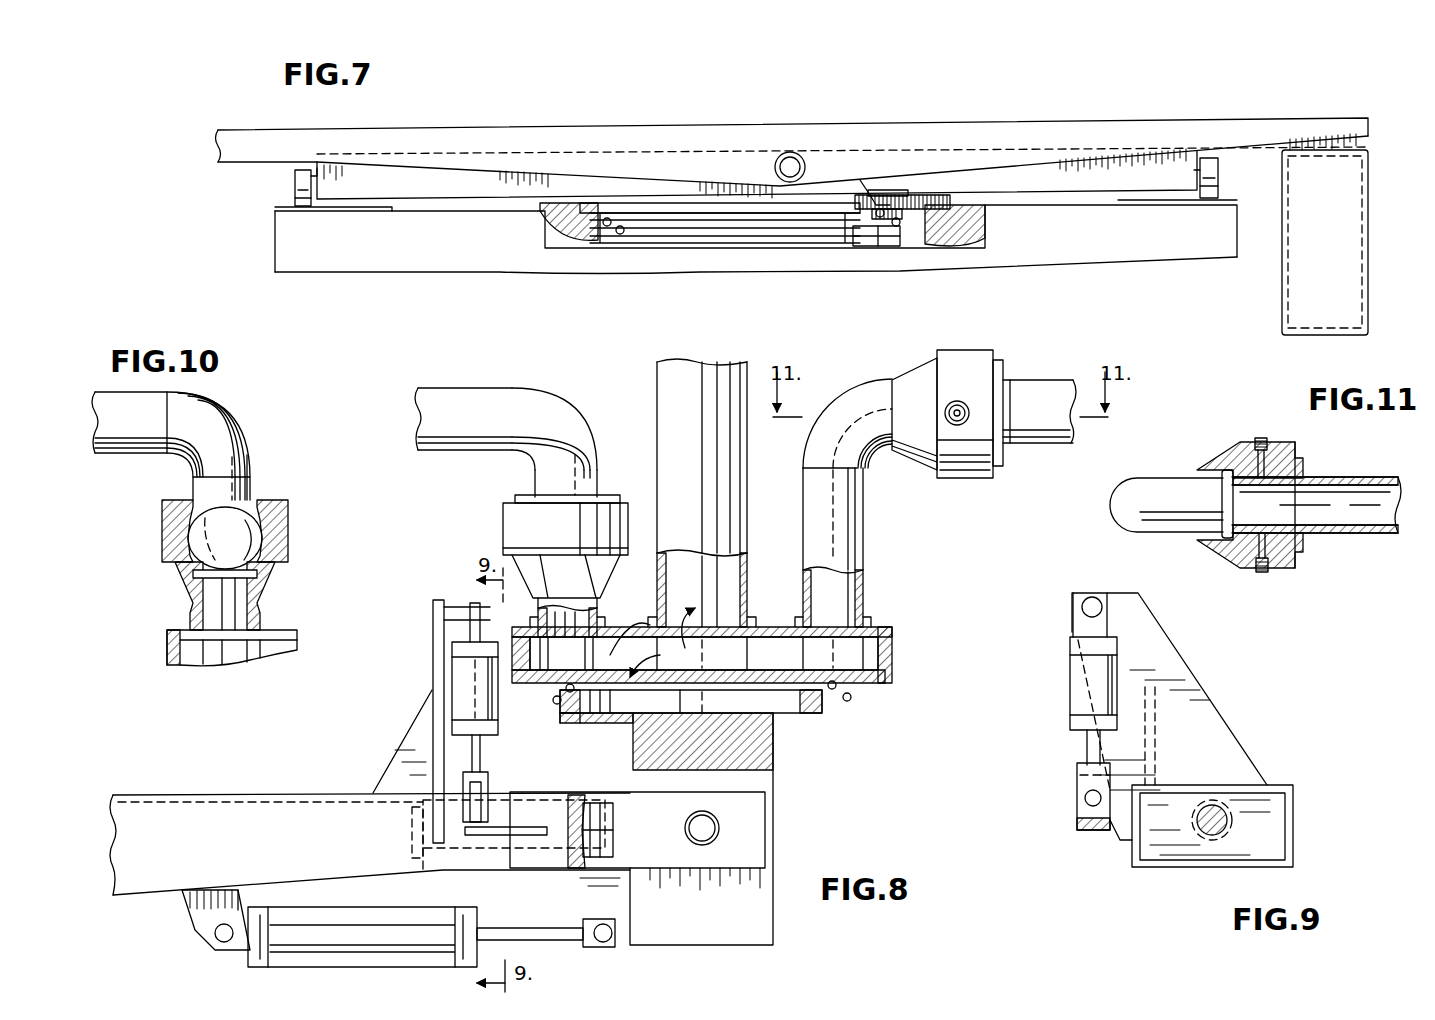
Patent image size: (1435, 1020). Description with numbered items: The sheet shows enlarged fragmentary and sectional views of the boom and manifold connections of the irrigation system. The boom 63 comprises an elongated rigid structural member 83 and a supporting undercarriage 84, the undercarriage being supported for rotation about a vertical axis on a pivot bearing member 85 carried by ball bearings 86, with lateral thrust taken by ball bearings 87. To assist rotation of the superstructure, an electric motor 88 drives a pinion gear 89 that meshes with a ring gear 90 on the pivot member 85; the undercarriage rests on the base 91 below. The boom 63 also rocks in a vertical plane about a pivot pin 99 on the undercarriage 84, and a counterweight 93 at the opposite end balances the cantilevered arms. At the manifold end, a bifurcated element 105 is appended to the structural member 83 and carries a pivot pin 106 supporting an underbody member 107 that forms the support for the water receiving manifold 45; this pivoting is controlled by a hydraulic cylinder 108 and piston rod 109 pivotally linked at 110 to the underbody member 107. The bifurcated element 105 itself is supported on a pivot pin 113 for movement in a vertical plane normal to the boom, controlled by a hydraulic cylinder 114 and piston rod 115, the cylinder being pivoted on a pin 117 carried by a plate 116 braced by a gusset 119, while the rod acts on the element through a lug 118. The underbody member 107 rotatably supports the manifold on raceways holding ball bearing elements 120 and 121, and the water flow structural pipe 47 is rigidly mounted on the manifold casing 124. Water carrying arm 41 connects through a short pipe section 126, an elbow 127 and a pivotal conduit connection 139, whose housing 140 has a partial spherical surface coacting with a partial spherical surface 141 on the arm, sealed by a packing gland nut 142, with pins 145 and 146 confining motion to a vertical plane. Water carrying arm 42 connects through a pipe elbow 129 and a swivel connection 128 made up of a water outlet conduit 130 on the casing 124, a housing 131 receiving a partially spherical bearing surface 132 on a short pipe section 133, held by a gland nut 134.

In FIG. 8, the water carrying arm 41 is at (1050, 378).
In FIG. 11, the water carrying arm 41 is at (1380, 478).
In FIG. 10, the water carrying arm 42 is at (110, 415).
In FIG. 8, the water carrying arm 42 is at (496, 394).
In FIG. 8, the water receiving manifold 45 is at (930, 608).
In FIG. 8, the water flow structural pipe 47 is at (660, 394).
In FIG. 7, the boom 63 is at (1030, 119).
In FIG. 8, the boom 63 is at (140, 793).
In FIG. 7, the elongated rigid structural member 83 is at (618, 142).
In FIG. 8, the elongated rigid structural member 83 is at (262, 810).
In FIG. 7, the supporting rigid structural base member or undercarriage 84 is at (1068, 187).
In FIG. 7, the pivot bearing member 85 is at (752, 236).
In FIG. 7, the ball bearings 86 is at (585, 228).
In FIG. 7, the ball bearings 87 is at (628, 242).
In FIG. 7, the electric motor 88 is at (874, 242).
In FIG. 7, the pinion gear 89 is at (870, 192).
In FIG. 7, the ring gear 90 is at (293, 186).
In FIG. 7, the base 91 is at (286, 207).
In FIG. 7, the counterweight 93 is at (1338, 234).
In FIG. 7, the pivot pin 99 is at (792, 152).
In FIG. 8, the bifurcated element 105 is at (744, 810).
In FIG. 8, the pivot pin 106 is at (710, 832).
In FIG. 8, the underbody member 107 is at (750, 758).
In FIG. 8, the hydraulic cylinder 108 is at (362, 962).
In FIG. 8, the piston rod 109 is at (554, 930).
In FIG. 8, the pivotal link 110 is at (606, 940).
In FIG. 8, the pivot pin 113 is at (526, 828).
In FIG. 9, the pivot pin 113 is at (1222, 824).
In FIG. 8, the hydraulic cylinder 114 is at (500, 710).
In FIG. 9, the hydraulic cylinder 114 is at (1082, 698).
In FIG. 8, the piston rod 115 is at (482, 760).
In FIG. 9, the piston rod 115 is at (1083, 744).
In FIG. 8, the plate 116 is at (432, 660).
In FIG. 9, the plate 116 is at (1222, 734).
In FIG. 8, the pin 117 is at (600, 882).
In FIG. 9, the pin 117 is at (1092, 608).
In FIG. 8, the lug 118 is at (518, 838).
In FIG. 9, the lug 118 is at (1098, 836).
In FIG. 8, the gusset 119 is at (414, 748).
In FIG. 9, the gusset 119 is at (1158, 742).
In FIG. 8, the ball bearing elements 120 is at (586, 672).
In FIG. 8, the ball bearing elements 121 is at (600, 702).
In FIG. 8, the casing 124 is at (608, 632).
In FIG. 8, the short pipe section 126 is at (858, 548).
In FIG. 8, the elbow 127 is at (838, 416).
In FIG. 11, the elbow 127 is at (1120, 502).
In FIG. 10, the pivotal conduit connection 128 is at (148, 549).
In FIG. 8, the pivotal conduit connection 128 is at (502, 520).
In FIG. 10, the pipe elbow 129 is at (218, 429).
In FIG. 8, the pipe elbow 129 is at (572, 434).
In FIG. 10, the water outlet pipe or conduit 130 is at (262, 608).
In FIG. 10, the housing 131 is at (280, 552).
In FIG. 10, the partially spherical bearing surface 132 is at (246, 530).
In FIG. 10, the short section of pipe 133 is at (250, 480).
In FIG. 10, the gland nut 134 is at (165, 510).
In FIG. 8, the pivotal conduit connection 139 is at (910, 356).
In FIG. 11, the pivotal conduit connection 139 is at (1205, 462).
In FIG. 8, the housing 140 is at (958, 356).
In FIG. 11, the housing 140 is at (1222, 555).
In FIG. 11, the partial spherical surface 141 is at (1228, 468).
In FIG. 8, the packing gland nut 142 is at (998, 364).
In FIG. 11, the packing gland nut 142 is at (1300, 541).
In FIG. 11, the pin 145 is at (1262, 436).
In FIG. 8, the pin 146 is at (968, 392).
In FIG. 11, the pin 146 is at (1262, 574).